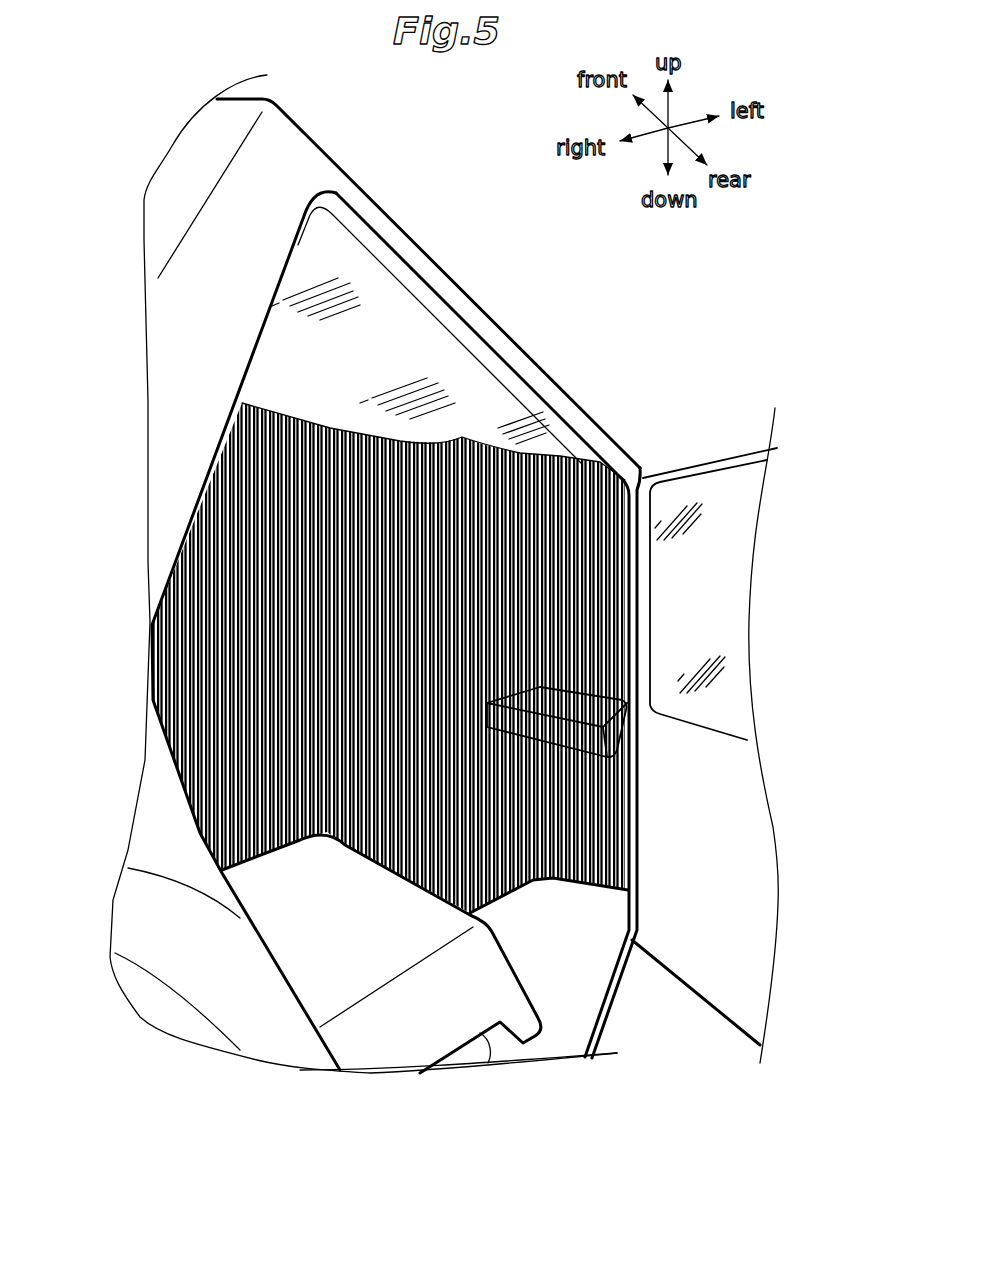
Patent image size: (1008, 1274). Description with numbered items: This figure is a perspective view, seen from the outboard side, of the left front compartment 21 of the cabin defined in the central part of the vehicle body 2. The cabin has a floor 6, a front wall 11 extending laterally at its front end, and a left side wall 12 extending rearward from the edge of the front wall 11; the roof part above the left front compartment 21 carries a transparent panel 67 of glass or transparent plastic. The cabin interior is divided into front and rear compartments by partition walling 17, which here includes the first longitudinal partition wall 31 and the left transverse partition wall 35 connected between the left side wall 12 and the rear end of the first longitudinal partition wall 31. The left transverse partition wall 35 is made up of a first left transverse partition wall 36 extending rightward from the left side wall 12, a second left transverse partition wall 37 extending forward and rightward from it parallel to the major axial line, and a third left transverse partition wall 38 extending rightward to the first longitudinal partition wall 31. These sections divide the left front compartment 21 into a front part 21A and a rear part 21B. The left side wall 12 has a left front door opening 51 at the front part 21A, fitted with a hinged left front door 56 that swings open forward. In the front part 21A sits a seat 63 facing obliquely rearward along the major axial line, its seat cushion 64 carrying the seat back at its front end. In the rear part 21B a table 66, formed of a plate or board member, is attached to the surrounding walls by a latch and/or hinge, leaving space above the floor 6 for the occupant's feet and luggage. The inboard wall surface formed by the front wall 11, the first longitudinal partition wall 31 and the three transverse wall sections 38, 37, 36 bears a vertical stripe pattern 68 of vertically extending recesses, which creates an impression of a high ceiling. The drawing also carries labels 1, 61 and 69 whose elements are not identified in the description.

The air conditioning unit 1 is at (410, 220).
The vehicle body 2 is at (333, 180).
The floor 6 is at (580, 1008).
The front wall 11 is at (179, 162).
The left side wall 12 is at (283, 143).
The partition walling 17 is at (390, 285).
The left front compartment 21 is at (585, 953).
The front part of left front compartment 21A is at (185, 604).
The rear part of left front compartment 21B is at (593, 898).
The first longitudinal partition wall 31 is at (257, 499).
The left transverse partition wall 35 is at (618, 487).
The first left transverse partition wall 36 is at (585, 512).
The second left transverse partition wall 37 is at (507, 477).
The third left transverse partition wall 38 is at (433, 470).
The left front door opening 51 is at (424, 296).
The left front door 56 is at (745, 793).
The window 61 is at (735, 540).
The seat 63 is at (410, 1033).
The seat cushion 64 is at (368, 1050).
The table 66 is at (573, 703).
The transparent panel 67 is at (323, 262).
The vertical stripe pattern 68 is at (240, 666).
The louver fin 69 is at (233, 753).